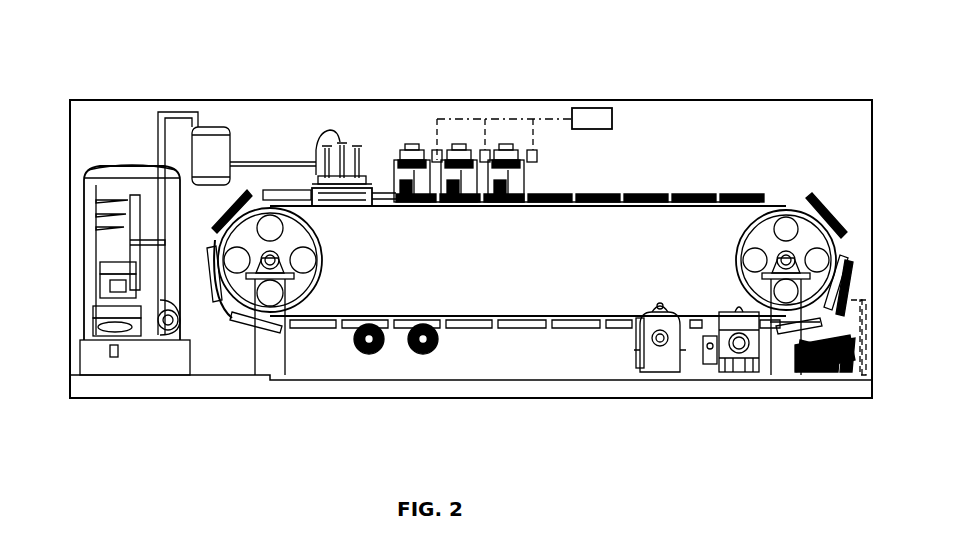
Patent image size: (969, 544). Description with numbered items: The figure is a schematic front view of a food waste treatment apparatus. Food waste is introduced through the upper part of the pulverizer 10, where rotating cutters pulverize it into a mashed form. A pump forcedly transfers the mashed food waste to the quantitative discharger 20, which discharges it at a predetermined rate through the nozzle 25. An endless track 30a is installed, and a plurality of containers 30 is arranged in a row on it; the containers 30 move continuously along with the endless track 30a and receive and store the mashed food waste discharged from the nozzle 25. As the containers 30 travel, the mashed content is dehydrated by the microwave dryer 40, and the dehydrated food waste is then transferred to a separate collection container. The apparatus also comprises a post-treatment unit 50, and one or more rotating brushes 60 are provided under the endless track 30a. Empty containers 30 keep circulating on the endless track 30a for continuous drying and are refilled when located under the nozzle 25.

The pulverizer 10 is at (95, 245).
The quantitative discharger 20 is at (216, 150).
The nozzle 25 is at (318, 150).
The containers 30 is at (472, 326).
The endless track 30a is at (563, 206).
The microwave dryer 40 is at (440, 125).
The post-treatment unit 50 is at (592, 118).
The rotating brushes 60 is at (372, 354).